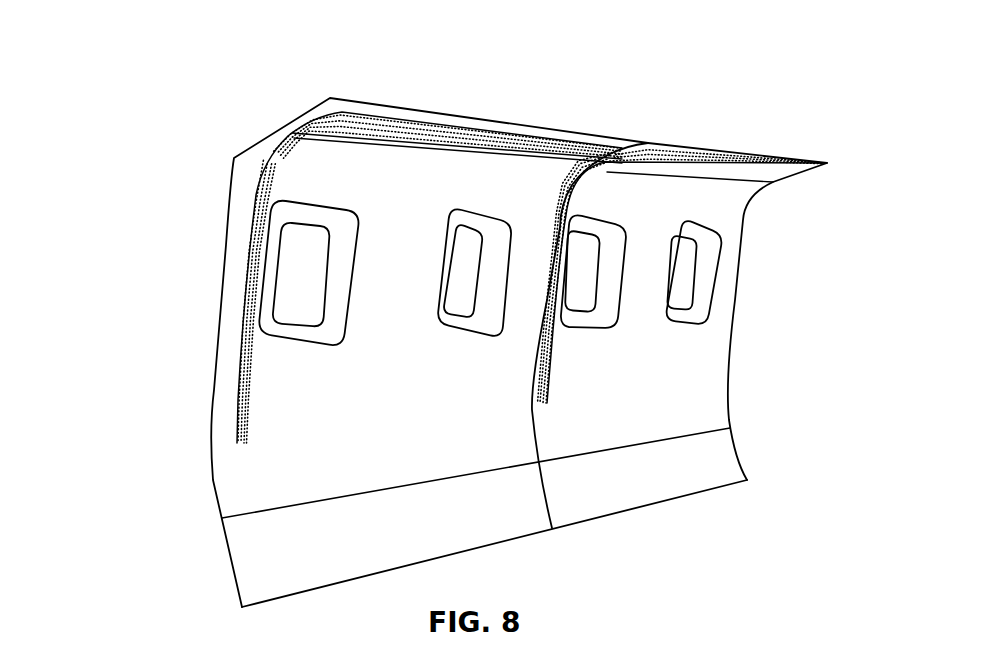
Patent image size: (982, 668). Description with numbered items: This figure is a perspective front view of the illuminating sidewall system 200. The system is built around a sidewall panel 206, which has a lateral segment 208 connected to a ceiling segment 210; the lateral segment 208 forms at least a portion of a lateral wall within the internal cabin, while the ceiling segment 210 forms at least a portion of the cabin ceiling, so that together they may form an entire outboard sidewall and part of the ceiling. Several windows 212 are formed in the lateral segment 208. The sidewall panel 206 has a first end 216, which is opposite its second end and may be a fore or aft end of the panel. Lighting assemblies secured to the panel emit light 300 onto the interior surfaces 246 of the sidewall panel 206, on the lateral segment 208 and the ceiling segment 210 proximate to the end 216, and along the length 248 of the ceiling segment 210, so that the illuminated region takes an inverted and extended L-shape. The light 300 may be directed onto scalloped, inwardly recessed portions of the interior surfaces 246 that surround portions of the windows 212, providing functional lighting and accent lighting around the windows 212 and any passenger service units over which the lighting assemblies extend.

The illuminating sidewall system 200 is at (246, 104).
The sidewall panel 206 is at (234, 476).
The lateral segment 208 is at (210, 430).
The ceiling segment 210 is at (392, 107).
The window 212 is at (455, 273).
The first end 216 is at (232, 370).
The interior surfaces 246 is at (371, 146).
The length 248 is at (835, 109).
The light 300 is at (487, 124).